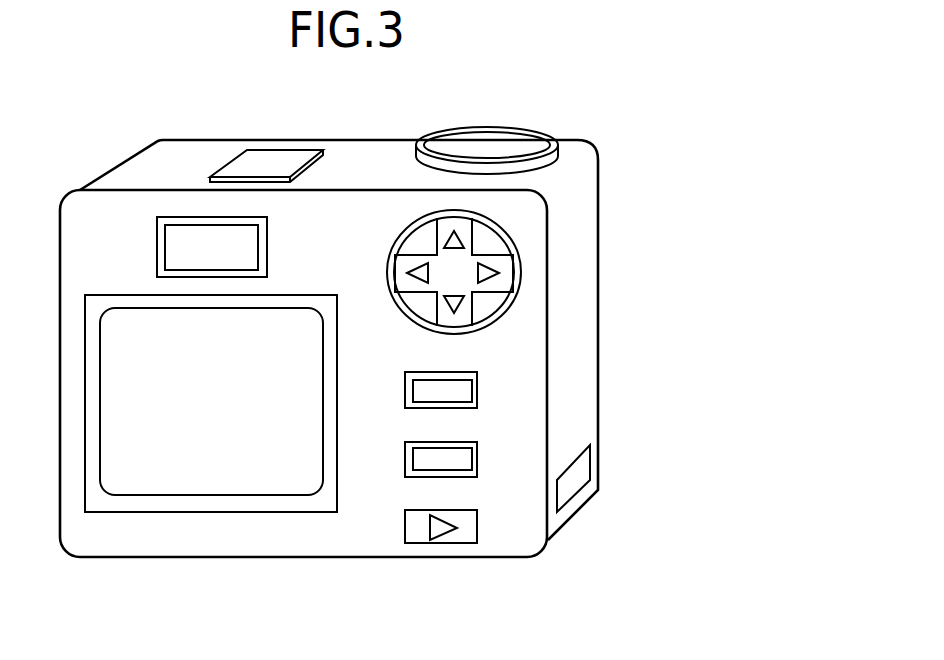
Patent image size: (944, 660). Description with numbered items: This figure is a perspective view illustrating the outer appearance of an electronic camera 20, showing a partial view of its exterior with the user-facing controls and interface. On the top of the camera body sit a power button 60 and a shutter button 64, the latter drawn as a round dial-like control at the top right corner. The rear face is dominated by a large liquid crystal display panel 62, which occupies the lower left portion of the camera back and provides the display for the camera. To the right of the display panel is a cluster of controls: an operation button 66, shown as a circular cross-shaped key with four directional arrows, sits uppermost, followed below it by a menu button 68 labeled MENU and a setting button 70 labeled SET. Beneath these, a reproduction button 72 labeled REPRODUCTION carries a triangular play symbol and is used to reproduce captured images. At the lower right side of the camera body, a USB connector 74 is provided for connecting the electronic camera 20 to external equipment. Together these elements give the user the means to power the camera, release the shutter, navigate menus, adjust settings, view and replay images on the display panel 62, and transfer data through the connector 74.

The electronic camera 20 is at (138, 547).
The power button 60 is at (277, 160).
The liquid crystal display panel 62 is at (268, 480).
The shutter button 64 is at (493, 140).
The operation button 66 is at (513, 257).
The menu button 68 is at (477, 387).
The setting button 70 is at (477, 450).
The reproduction button 72 is at (460, 543).
The USB connector 74 is at (572, 485).